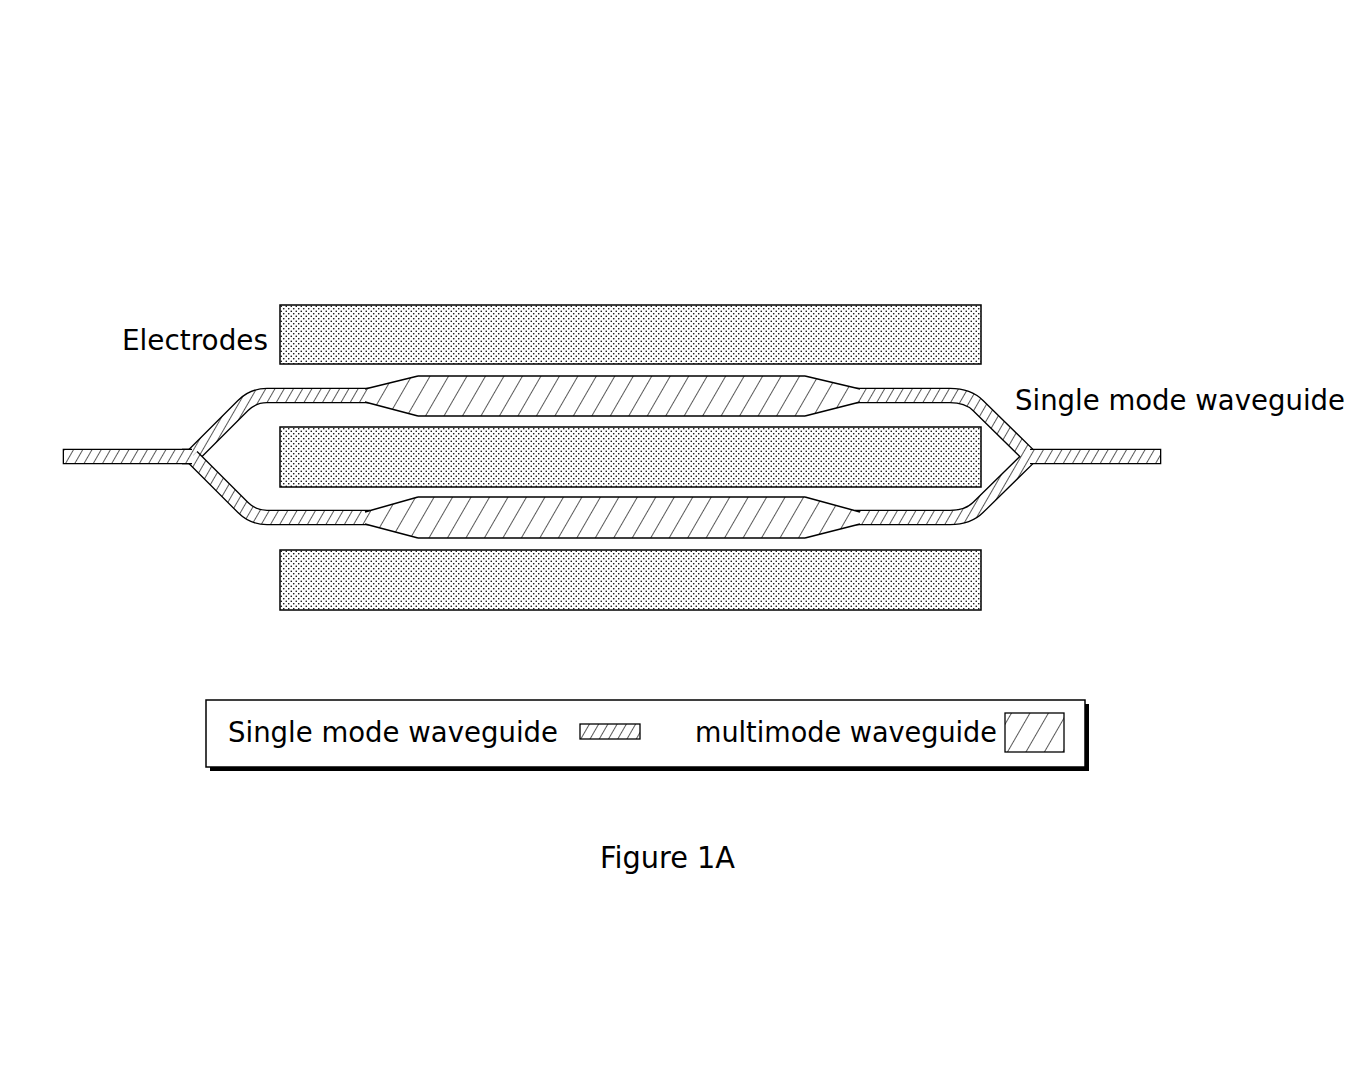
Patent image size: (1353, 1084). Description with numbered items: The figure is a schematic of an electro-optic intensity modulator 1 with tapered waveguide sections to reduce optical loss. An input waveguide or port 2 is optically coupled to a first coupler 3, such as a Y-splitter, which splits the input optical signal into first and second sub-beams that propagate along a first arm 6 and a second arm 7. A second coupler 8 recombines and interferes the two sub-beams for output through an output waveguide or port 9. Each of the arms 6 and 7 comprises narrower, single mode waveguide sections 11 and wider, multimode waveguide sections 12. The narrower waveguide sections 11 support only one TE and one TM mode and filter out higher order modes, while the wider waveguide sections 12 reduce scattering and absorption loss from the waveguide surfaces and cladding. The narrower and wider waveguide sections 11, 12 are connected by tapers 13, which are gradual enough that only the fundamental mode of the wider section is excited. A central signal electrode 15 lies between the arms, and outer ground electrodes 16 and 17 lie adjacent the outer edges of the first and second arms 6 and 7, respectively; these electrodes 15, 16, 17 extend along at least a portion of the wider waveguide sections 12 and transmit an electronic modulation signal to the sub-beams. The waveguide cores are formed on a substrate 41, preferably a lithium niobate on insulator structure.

The electro-optic intensity modulator 1 is at (444, 192).
The input waveguide or port 2 is at (85, 449).
The first coupler 3 is at (167, 464).
The first arm 6 is at (208, 404).
The second arm 7 is at (224, 532).
The second coupler 8 is at (1035, 468).
The output waveguide or port 9 is at (1163, 465).
The narrower waveguide section 11 is at (300, 388).
The wider waveguide section 12 is at (602, 390).
The taper 13 is at (405, 393).
The central signal electrode 15 is at (520, 448).
The outer ground electrode 16 is at (740, 322).
The outer ground electrode 17 is at (541, 597).
The substrate 41 is at (1111, 338).